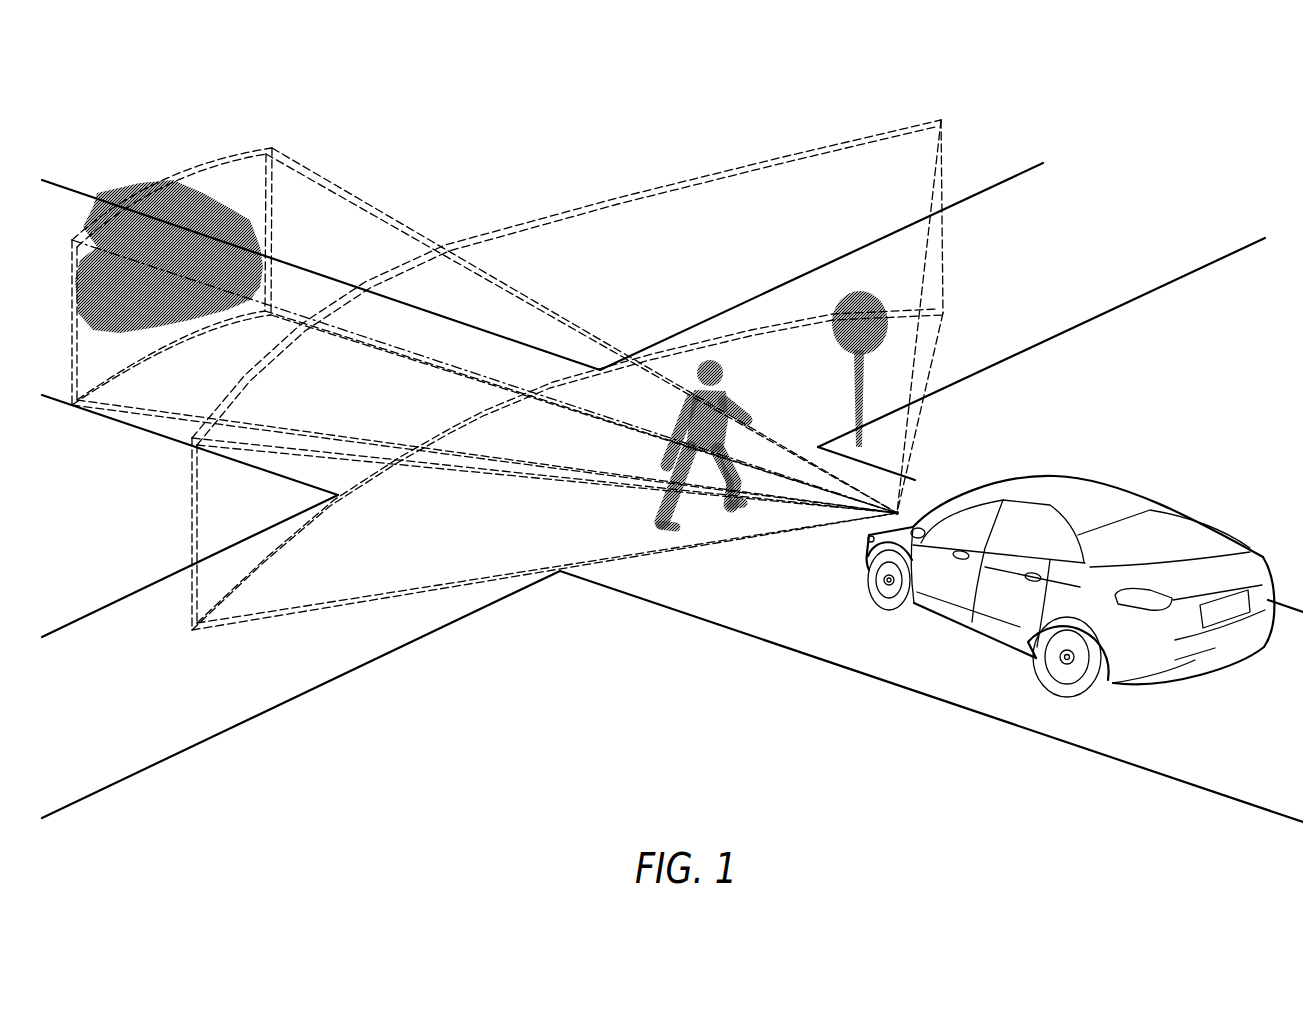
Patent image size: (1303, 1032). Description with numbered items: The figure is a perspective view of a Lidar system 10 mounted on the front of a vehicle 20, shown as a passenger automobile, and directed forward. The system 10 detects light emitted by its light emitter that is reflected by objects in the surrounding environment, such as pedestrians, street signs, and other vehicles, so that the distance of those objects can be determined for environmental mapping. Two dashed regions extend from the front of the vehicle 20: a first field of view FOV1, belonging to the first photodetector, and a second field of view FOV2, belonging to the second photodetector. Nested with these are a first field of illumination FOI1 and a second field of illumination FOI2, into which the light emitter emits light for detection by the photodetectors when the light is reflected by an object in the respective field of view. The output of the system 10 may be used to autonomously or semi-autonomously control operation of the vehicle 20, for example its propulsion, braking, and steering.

The system 10 is at (866, 529).
The vehicle 20 is at (1146, 462).
The first field of view FOV1 is at (778, 145).
The first field of illumination FOI1 is at (817, 138).
The second field of view FOV2 is at (293, 162).
The second field of illumination FOI2 is at (323, 177).